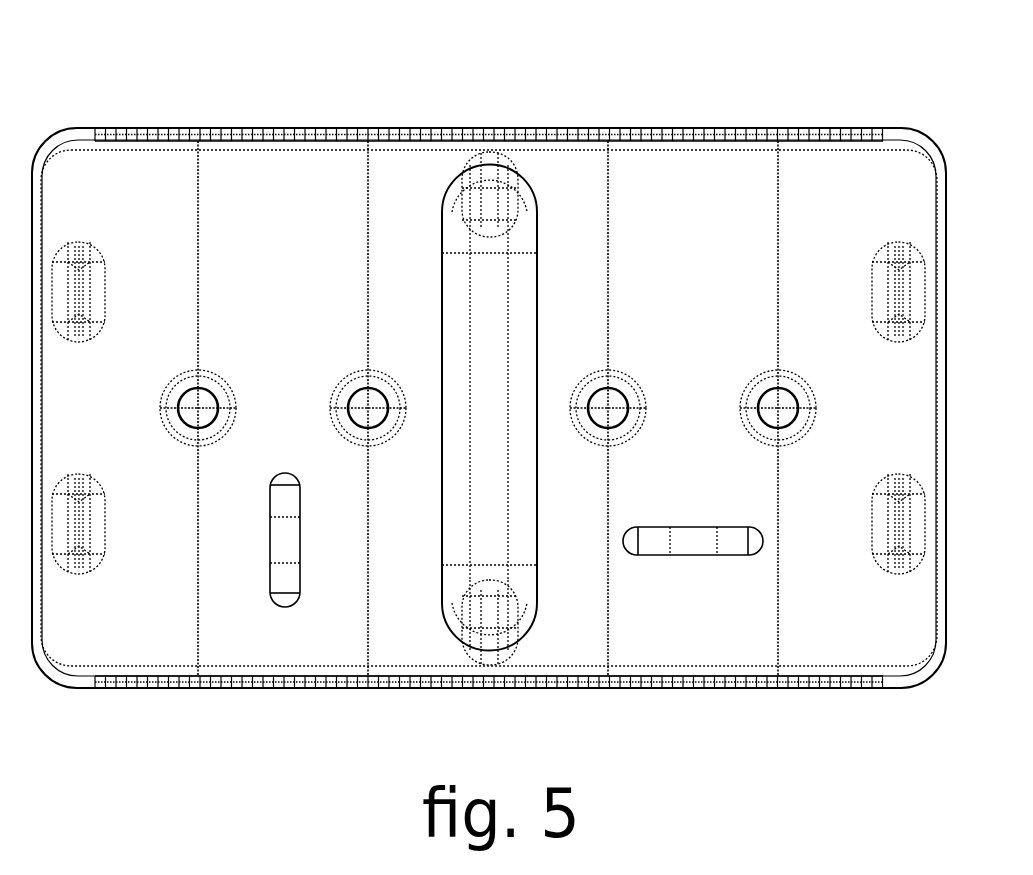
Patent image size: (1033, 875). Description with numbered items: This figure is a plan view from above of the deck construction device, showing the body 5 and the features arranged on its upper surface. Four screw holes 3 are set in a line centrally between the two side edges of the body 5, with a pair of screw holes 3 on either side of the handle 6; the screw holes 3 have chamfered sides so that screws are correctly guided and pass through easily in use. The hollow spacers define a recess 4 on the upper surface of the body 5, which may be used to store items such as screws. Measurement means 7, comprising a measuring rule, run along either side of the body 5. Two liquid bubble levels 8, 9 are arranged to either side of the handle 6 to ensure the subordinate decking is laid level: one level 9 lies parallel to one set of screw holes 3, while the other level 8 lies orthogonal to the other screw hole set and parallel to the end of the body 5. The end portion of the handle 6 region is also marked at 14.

The screw holes 3 is at (488, 389).
The recess 4 is at (488, 408).
The body 5 is at (712, 183).
The handle 6 is at (489, 408).
The measurement means 7 is at (489, 407).
The liquid bubble level 8 is at (300, 540).
The liquid bubble level 9 is at (693, 562).
The end holes of central slot 14 is at (498, 625).